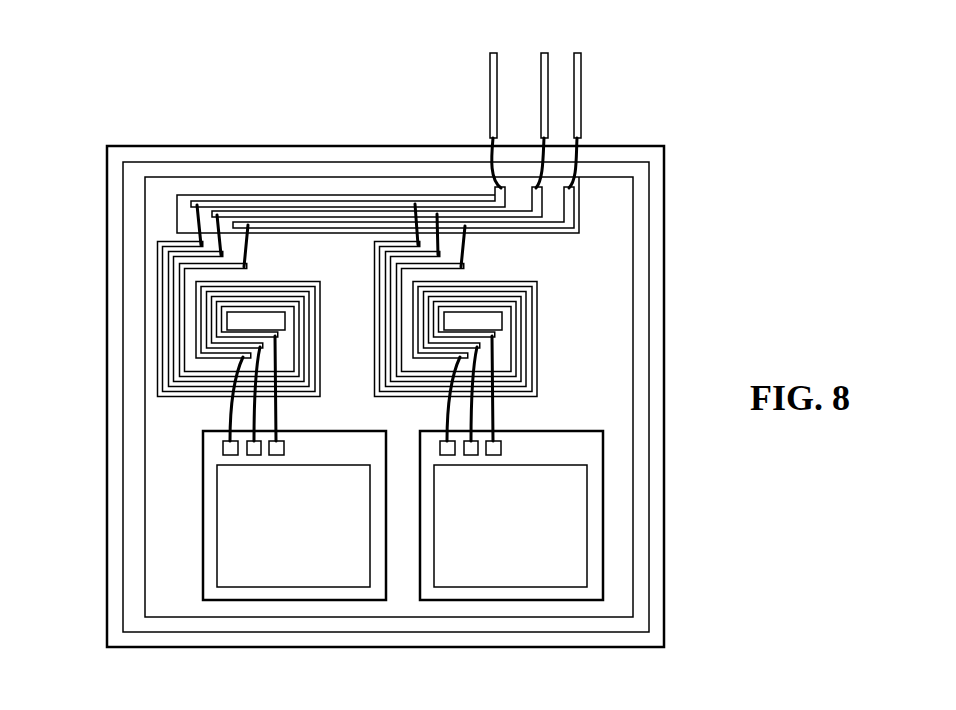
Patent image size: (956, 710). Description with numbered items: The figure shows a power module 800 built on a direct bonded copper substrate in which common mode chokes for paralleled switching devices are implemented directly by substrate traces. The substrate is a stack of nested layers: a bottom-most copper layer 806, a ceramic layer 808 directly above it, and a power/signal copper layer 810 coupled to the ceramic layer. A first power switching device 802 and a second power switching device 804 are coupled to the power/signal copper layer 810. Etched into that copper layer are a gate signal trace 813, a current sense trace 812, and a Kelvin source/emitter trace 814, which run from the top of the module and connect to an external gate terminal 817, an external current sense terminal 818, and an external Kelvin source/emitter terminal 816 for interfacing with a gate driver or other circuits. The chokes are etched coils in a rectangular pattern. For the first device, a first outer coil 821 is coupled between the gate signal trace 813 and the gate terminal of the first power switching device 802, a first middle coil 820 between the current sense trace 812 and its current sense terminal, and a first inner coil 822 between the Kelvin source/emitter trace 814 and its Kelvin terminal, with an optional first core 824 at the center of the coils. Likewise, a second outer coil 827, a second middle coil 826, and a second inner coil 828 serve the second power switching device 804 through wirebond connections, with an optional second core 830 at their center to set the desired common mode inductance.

The power module 800 is at (661, 81).
The first power switching device 802 is at (494, 537).
The second power switching device 804 is at (277, 537).
The bottom-most copper layer 806 is at (663, 515).
The ceramic layer 808 is at (130, 468).
The power/signal copper layer 810 is at (633, 480).
The current sense trace 812 is at (275, 215).
The gate signal trace 813 is at (368, 203).
The Kelvin source/emitter trace 814 is at (570, 205).
The external Kelvin source/emitter terminal 816 is at (581, 89).
The external gate terminal 817 is at (490, 90).
The external current sense terminal 818 is at (541, 90).
The first middle coil 820 is at (520, 348).
The first outer coil 821 is at (533, 370).
The first inner coil 822 is at (512, 329).
The first core 824 is at (494, 314).
The second middle coil 826 is at (170, 348).
The second outer coil 827 is at (158, 368).
The second inner coil 828 is at (183, 327).
The second core 830 is at (265, 314).